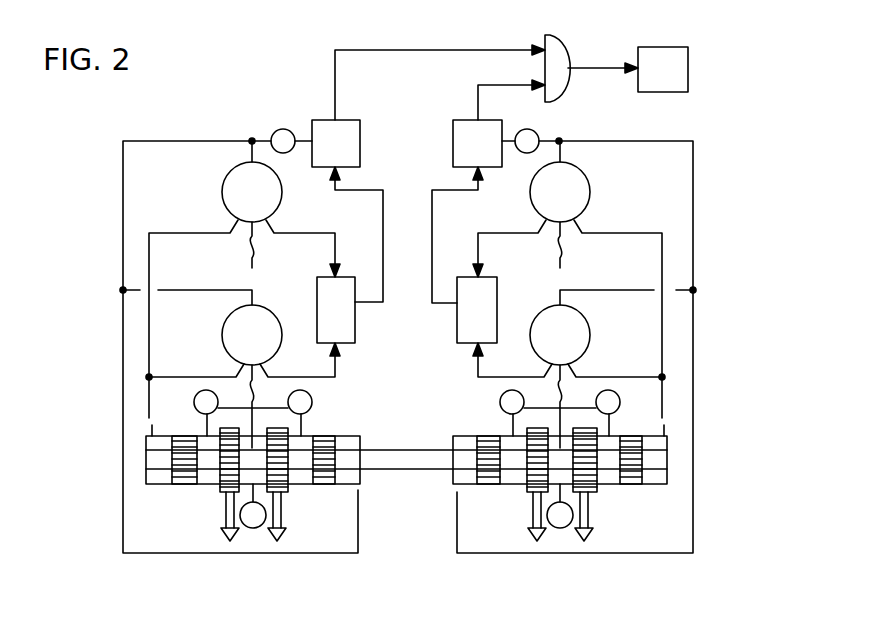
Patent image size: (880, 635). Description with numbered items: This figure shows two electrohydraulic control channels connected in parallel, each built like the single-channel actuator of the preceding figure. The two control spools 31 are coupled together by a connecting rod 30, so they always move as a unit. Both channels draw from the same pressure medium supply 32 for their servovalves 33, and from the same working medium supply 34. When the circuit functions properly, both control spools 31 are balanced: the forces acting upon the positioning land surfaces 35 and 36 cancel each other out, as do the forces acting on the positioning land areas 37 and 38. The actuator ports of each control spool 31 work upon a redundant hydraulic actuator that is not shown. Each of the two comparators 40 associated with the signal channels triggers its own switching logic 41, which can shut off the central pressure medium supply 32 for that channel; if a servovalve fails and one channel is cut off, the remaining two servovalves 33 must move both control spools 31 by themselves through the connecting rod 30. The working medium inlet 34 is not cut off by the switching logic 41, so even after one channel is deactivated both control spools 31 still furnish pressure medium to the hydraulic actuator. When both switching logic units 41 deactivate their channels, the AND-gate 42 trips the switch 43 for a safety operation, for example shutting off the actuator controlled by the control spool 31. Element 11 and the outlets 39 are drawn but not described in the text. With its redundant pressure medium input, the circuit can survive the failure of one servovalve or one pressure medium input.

The pressure gauge 11 is at (253, 520).
The connecting rod 30 is at (397, 458).
The control spool 31 is at (205, 462).
The pressure medium supply 32 is at (283, 137).
The servovalve 33 is at (240, 192).
The working medium supply 34 is at (198, 405).
The positioning land surface 35 is at (645, 457).
The positioning land surface 36 is at (472, 472).
The positioning land area 37 is at (172, 462).
The positioning land area 38 is at (347, 477).
The outlet 39 is at (228, 530).
The comparator 40 is at (335, 295).
The switching logic 41 is at (333, 153).
The AND-gate 42 is at (555, 70).
The switch 43 is at (667, 72).